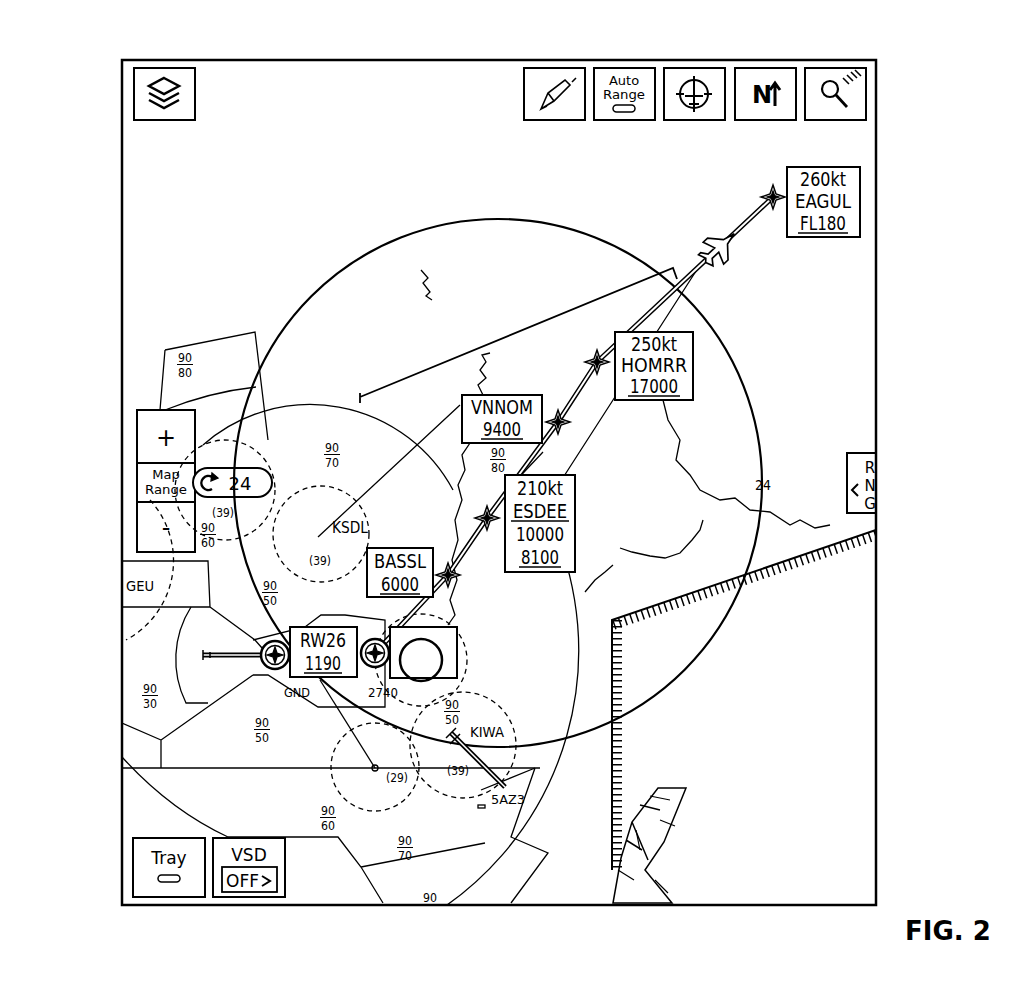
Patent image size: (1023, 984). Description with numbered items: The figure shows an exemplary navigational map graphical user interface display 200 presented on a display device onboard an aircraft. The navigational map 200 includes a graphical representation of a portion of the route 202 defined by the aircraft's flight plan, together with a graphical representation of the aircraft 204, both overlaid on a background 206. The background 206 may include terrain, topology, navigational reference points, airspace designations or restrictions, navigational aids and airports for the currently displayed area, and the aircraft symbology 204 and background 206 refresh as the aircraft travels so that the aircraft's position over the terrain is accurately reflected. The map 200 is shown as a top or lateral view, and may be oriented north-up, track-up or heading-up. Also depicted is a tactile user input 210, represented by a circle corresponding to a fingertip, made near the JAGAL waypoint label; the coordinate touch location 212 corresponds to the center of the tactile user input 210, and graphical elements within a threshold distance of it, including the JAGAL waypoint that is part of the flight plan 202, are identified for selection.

The navigational map graphical user interface display 200 is at (114, 54).
The route 202 is at (563, 375).
The graphical representation of the aircraft 204 is at (740, 245).
The background 206 is at (690, 552).
The tactile user input 210 is at (430, 654).
The coordinate touch location 212 is at (405, 652).